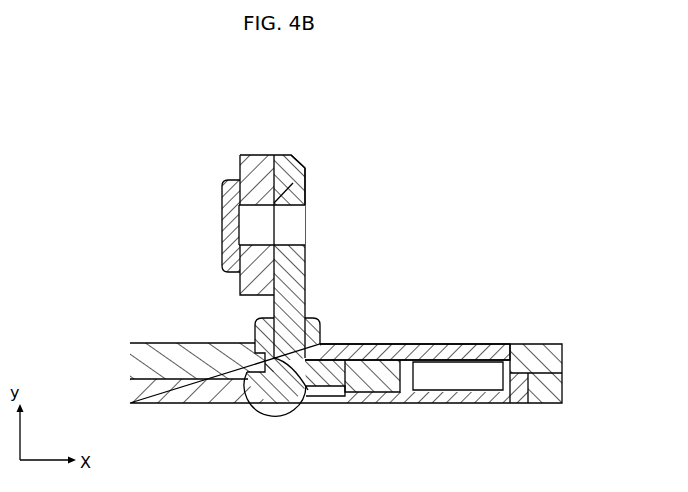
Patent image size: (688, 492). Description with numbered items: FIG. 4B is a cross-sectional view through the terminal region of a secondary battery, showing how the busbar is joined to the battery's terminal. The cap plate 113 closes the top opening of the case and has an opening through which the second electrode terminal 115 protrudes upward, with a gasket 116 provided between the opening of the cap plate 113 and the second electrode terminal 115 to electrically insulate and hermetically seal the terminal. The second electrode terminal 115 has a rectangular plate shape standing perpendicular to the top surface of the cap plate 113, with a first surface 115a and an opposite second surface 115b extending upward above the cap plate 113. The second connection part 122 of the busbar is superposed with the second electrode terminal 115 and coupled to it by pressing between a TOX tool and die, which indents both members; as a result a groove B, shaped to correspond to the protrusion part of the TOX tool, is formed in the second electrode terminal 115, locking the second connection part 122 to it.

The cap plate 113 is at (142, 362).
The gasket 116 is at (483, 355).
The second electrode terminal 115 is at (299, 158).
The first surface 115a is at (268, 185).
The second surface 115b is at (308, 185).
The second connection part 122 is at (252, 162).
The groove B is at (245, 225).